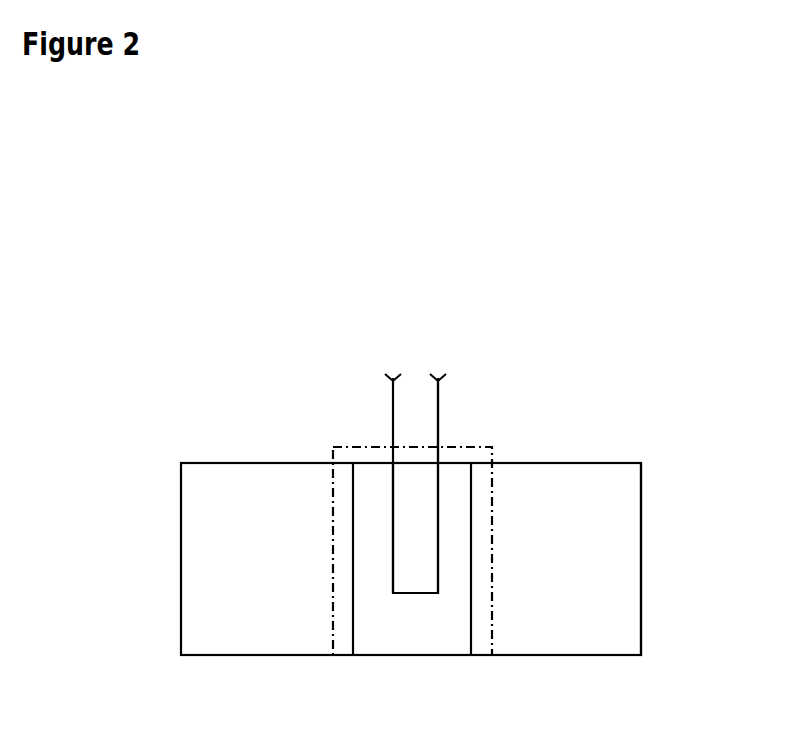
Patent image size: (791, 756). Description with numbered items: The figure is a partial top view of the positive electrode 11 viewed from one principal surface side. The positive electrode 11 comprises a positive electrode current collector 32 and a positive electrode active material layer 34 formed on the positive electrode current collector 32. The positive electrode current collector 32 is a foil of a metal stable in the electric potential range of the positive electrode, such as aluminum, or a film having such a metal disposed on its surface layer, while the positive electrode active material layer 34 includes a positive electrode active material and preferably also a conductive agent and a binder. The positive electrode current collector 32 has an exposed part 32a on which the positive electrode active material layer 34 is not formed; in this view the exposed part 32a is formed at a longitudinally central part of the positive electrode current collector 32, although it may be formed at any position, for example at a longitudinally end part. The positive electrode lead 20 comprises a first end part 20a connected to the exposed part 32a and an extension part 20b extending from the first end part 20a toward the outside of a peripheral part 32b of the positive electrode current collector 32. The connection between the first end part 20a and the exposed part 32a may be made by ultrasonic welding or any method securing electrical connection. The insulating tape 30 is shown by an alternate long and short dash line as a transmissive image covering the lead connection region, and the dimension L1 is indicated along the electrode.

The positive electrode 11 is at (642, 481).
The positive electrode lead 20 is at (392, 420).
The first end part 20a is at (392, 519).
The extension part 20b is at (438, 428).
The insulating tape 30 is at (493, 612).
The positive electrode current collector 32 is at (412, 601).
The exposed part 32a is at (405, 640).
The peripheral part 32b is at (275, 463).
The positive electrode active material layer 34 is at (627, 528).
The length L1 is at (181, 572).